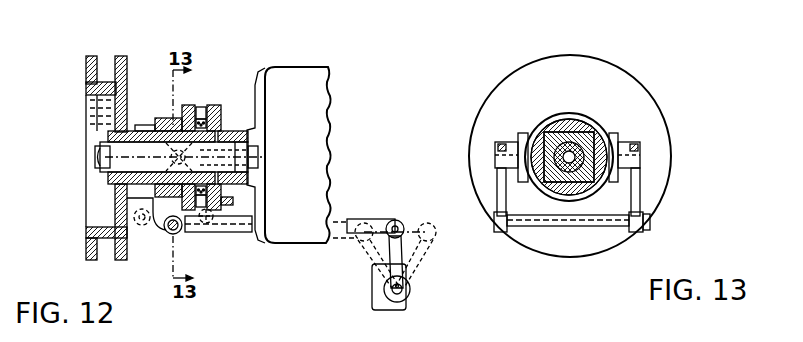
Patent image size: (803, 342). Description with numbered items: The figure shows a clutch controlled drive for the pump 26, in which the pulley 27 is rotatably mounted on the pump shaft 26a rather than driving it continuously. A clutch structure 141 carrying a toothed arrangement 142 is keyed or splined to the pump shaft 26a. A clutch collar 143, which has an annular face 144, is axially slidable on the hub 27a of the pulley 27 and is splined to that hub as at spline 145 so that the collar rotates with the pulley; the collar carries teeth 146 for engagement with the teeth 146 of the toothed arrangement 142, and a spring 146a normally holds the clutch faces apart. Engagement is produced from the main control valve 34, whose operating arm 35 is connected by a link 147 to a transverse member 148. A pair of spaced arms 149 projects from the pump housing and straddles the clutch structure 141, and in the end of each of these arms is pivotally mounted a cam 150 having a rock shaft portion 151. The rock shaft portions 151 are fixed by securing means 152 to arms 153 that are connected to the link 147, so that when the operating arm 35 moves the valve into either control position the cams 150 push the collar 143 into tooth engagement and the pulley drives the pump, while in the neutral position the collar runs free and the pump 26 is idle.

In FIG. 12, the pump 26 is at (313, 123).
In FIG. 13, the pump 26 is at (663, 192).
In FIG. 12, the pump shaft 26a is at (256, 95).
In FIG. 13, the pump shaft 26a is at (569, 157).
In FIG. 12, the pulley 27 is at (88, 248).
In FIG. 12, the hub 27a is at (108, 134).
In FIG. 12, the main control valve 34 is at (371, 307).
In FIG. 12, the operating arm 35 is at (400, 252).
In FIG. 12, the clutch structure 141 is at (234, 130).
In FIG. 12, the toothed arrangement 142 is at (217, 110).
In FIG. 12, the clutch collar 143 is at (165, 117).
In FIG. 12, the annular face 144 is at (187, 105).
In FIG. 12, the spline 145 is at (145, 125).
In FIG. 12, the teeth 146 is at (200, 107).
In FIG. 12, the spring 146a is at (222, 206).
In FIG. 12, the link 147 is at (213, 233).
In FIG. 13, the link 147 is at (646, 230).
In FIG. 12, the transverse member 148 is at (172, 235).
In FIG. 13, the transverse member 148 is at (538, 221).
In FIG. 13, the spaced arms 149 is at (512, 141).
In FIG. 13, the cam 150 is at (522, 132).
In FIG. 13, the rock shaft portion 151 is at (497, 170).
In FIG. 13, the securing means 152 is at (497, 145).
In FIG. 12, the arms 153 is at (163, 200).
In FIG. 13, the arms 153 is at (501, 196).